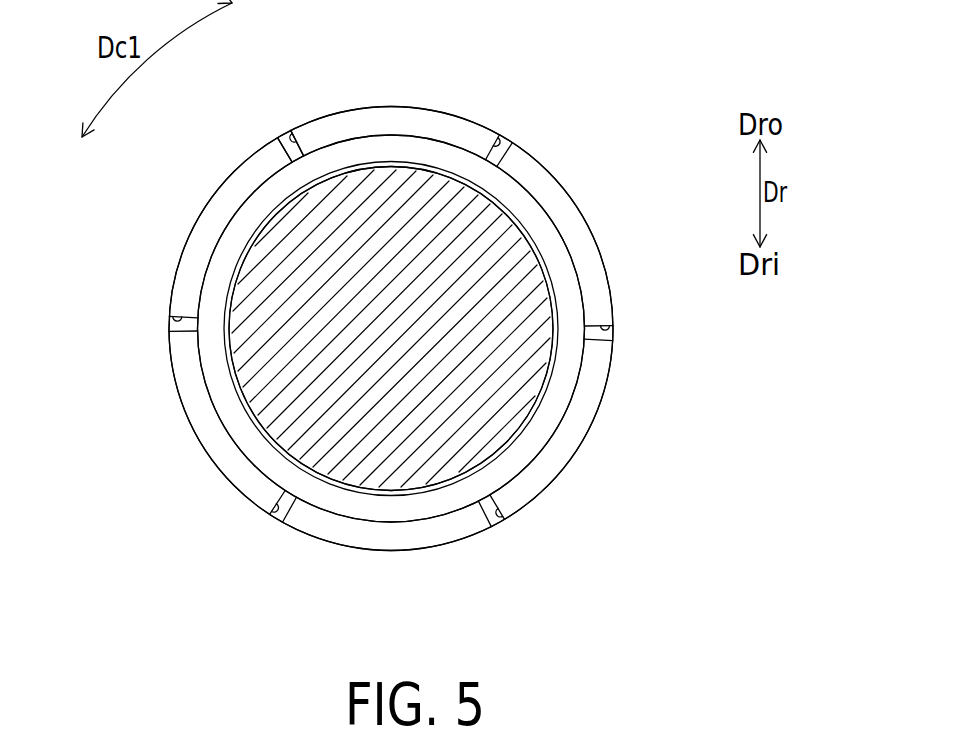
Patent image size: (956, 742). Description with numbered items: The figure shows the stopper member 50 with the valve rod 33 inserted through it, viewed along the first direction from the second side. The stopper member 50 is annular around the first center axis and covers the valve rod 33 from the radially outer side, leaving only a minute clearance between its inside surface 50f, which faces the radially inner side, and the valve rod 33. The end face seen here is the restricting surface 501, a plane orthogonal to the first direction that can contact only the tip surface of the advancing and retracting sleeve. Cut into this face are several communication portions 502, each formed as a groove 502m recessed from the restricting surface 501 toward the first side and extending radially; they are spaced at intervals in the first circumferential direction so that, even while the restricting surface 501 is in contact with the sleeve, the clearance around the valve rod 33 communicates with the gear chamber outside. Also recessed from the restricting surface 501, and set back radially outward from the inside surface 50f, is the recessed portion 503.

The stopper member 50 is at (462, 118).
The restricting surface 501 is at (543, 185).
The communication portion 502 is at (288, 138).
The groove 502m is at (325, 107).
The recessed portion 503 is at (566, 385).
The inside surface 50f is at (498, 436).
The valve rod 33 is at (528, 272).